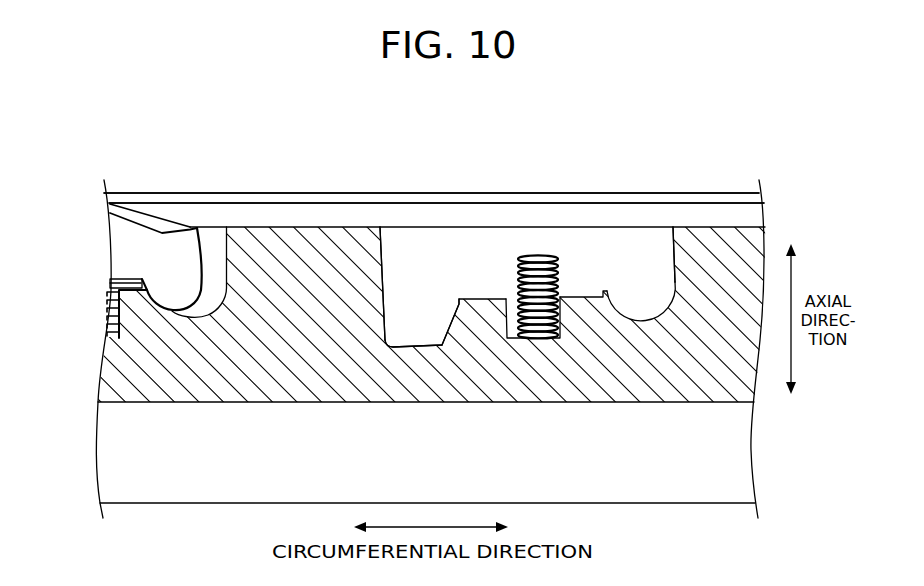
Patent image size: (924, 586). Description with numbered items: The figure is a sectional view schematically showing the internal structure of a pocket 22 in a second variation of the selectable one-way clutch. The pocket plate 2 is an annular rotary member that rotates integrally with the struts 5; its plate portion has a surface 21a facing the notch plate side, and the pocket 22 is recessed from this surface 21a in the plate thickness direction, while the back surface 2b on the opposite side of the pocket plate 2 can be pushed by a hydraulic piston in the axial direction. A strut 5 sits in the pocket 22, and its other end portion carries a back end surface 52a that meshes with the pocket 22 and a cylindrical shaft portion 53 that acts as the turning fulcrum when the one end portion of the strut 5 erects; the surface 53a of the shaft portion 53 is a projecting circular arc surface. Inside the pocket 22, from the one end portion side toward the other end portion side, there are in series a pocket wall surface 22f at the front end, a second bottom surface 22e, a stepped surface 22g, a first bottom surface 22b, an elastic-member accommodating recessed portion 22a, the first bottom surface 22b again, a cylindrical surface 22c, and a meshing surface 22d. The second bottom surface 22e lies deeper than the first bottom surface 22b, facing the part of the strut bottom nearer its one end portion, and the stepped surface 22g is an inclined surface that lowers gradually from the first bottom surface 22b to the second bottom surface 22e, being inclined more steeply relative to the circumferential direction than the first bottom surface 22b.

The pocket plate 2 is at (655, 165).
The back surface 2b is at (351, 404).
The surface 21a is at (306, 226).
The pocket 22 is at (551, 215).
The elastic-member accommodating recessed portion 22a is at (515, 305).
The first bottom surface 22b is at (477, 296).
The cylindrical surface 22c is at (638, 319).
The meshing surface 22d is at (670, 247).
The second bottom surface 22e is at (418, 343).
The pocket wall surface 22f is at (385, 257).
The stepped surface 22g is at (448, 317).
The strut 5 is at (152, 223).
The back end surface 52a is at (213, 243).
The shaft portion 53 is at (162, 293).
The surface of the shaft portion 53a is at (210, 298).